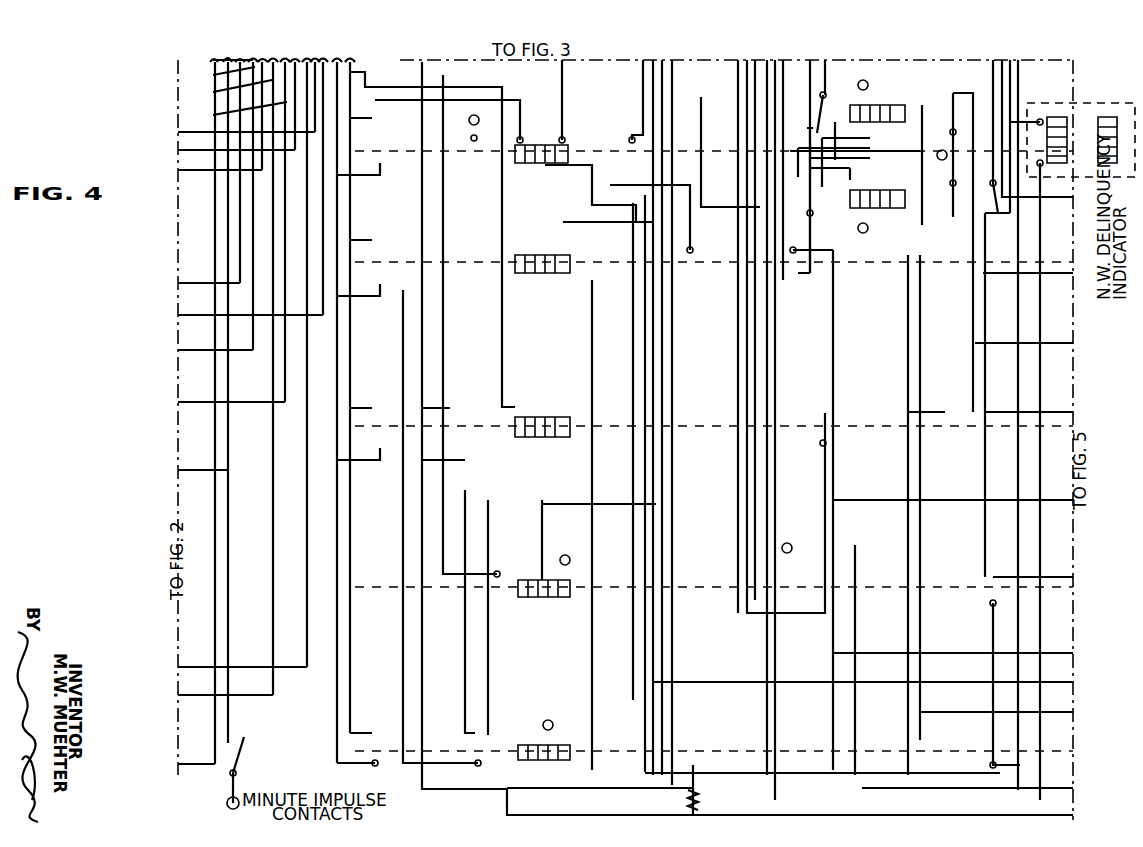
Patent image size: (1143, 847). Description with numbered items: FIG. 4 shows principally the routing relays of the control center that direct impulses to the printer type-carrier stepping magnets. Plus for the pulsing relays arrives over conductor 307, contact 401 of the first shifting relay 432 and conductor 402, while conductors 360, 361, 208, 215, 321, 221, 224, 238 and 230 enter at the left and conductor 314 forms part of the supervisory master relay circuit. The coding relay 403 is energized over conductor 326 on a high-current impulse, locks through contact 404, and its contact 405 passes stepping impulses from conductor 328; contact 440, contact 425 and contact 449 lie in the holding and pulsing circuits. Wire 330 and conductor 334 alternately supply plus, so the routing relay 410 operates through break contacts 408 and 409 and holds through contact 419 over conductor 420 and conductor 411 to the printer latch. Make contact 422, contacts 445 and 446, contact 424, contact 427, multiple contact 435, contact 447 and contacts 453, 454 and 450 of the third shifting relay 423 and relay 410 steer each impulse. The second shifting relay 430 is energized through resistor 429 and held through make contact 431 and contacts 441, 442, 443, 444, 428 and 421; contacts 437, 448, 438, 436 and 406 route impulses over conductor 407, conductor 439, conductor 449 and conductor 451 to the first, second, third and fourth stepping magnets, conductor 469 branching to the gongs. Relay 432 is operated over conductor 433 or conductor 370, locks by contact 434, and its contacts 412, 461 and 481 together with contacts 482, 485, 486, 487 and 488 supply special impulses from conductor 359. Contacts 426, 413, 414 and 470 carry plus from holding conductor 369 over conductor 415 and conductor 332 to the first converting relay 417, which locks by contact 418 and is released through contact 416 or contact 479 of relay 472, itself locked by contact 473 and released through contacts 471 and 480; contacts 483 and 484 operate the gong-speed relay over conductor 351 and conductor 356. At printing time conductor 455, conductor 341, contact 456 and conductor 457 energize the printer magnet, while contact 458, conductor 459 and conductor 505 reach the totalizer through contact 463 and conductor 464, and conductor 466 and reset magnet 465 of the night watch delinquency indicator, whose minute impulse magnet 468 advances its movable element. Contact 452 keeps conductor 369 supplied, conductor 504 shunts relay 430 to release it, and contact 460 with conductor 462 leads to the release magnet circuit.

The conductor 360 is at (215, 62).
The conductor 361 is at (228, 62).
The conductor 314 is at (356, 45).
The conductor 208 is at (285, 62).
The conductor 215 is at (323, 62).
The conductor 321 is at (240, 98).
The conductor 221 is at (197, 199).
The conductor 224 is at (197, 122).
The conductor 238 is at (197, 391).
The conductor 230 is at (197, 254).
The conductor 402 is at (352, 65).
The conductor 334 is at (422, 68).
The conductor 307 is at (384, 73).
The wire 330 is at (464, 73).
The conductor 420 is at (522, 190).
The conductor 326 is at (562, 68).
The conductor 433 is at (653, 62).
The conductor 370 is at (672, 62).
The conductor 351 is at (738, 62).
The holding conductor 369 is at (775, 48).
The conductor 359 is at (783, 62).
The conductor 332 is at (823, 75).
The conductor 464 is at (993, 62).
The conductor 356 is at (1010, 65).
The conductor 466 is at (1012, 80).
The conductor 469 is at (1020, 97).
The resetting magnet 465 is at (1047, 108).
The minute impulses magnet 468 is at (1102, 108).
The conductor 411 is at (653, 72).
The conductor 328 is at (620, 92).
The conductor 341 is at (738, 72).
The conductor 455 is at (712, 92).
The conductor 415 is at (804, 92).
The contact 416 is at (797, 122).
The contact 479 is at (837, 122).
The relay 472 is at (872, 105).
The contact 473 is at (922, 95).
The contact 488 is at (969, 83).
The contact 484 is at (692, 119).
The contact 483 is at (692, 161).
The first converting relay 417 is at (889, 172).
The contact 471 is at (834, 205).
The contact 480 is at (797, 207).
The contact 418 is at (917, 232).
The contact 487 is at (954, 232).
The make contact 463 is at (1002, 232).
The coding relay 403 is at (539, 128).
The make contact 440 is at (580, 128).
The contact 425 is at (606, 150).
The contact 404 is at (477, 188).
The contact 405 is at (605, 191).
The contact 449 is at (1047, 573).
The contact 447 is at (374, 233).
The contact 419 is at (469, 233).
The routing relay 410 is at (534, 233).
The make contact 422 is at (585, 275).
The contact 445 is at (621, 269).
The contact 426 is at (721, 269).
The contact 448 is at (1033, 547).
The contact 470 is at (818, 300).
The contact 414 is at (792, 316).
The contact 482 is at (956, 268).
The contact 485 is at (956, 281).
The conductor 407 is at (935, 305).
The conductor 505 is at (1059, 265).
The conductor 439 is at (1055, 340).
The multiple contact 435 is at (374, 388).
The third shifting relay 423 is at (552, 390).
The contact 424 is at (492, 416).
The break contact 408 is at (463, 432).
The contact 427 is at (719, 390).
The contact 413 is at (830, 405).
The contact 486 is at (944, 390).
The contact 438 is at (997, 390).
The conductor 451 is at (1062, 398).
The contact 446 is at (616, 452).
The contact 453 is at (619, 473).
The contact 454 is at (732, 463).
The contact 450 is at (1006, 437).
The conductor 459 is at (1060, 522).
The second shifting relay 430 is at (511, 558).
The contact 443 is at (483, 595).
The make contact 431 is at (509, 619).
The contact 441 is at (611, 606).
The contact 458 is at (847, 543).
The contact 456 is at (845, 565).
The contact 460 is at (855, 595).
The contact 452 is at (792, 626).
The contact 437 is at (985, 590).
The conductor 457 is at (1030, 653).
The contact 401 is at (372, 713).
The contact 444 is at (478, 728).
The break contact 409 is at (442, 743).
The first shifting relay 432 is at (541, 698).
The break contact 421 is at (570, 713).
The contact 434 is at (621, 713).
The contact 442 is at (695, 735).
The contact 428 is at (705, 738).
The contact 412 is at (792, 713).
The contact 461 is at (880, 713).
The contact 481 is at (924, 765).
The make contact 436 is at (1000, 752).
The back contact 406 is at (1003, 758).
The conductor 462 is at (1015, 796).
The conductor 504 is at (580, 812).
The resistor 429 is at (700, 798).